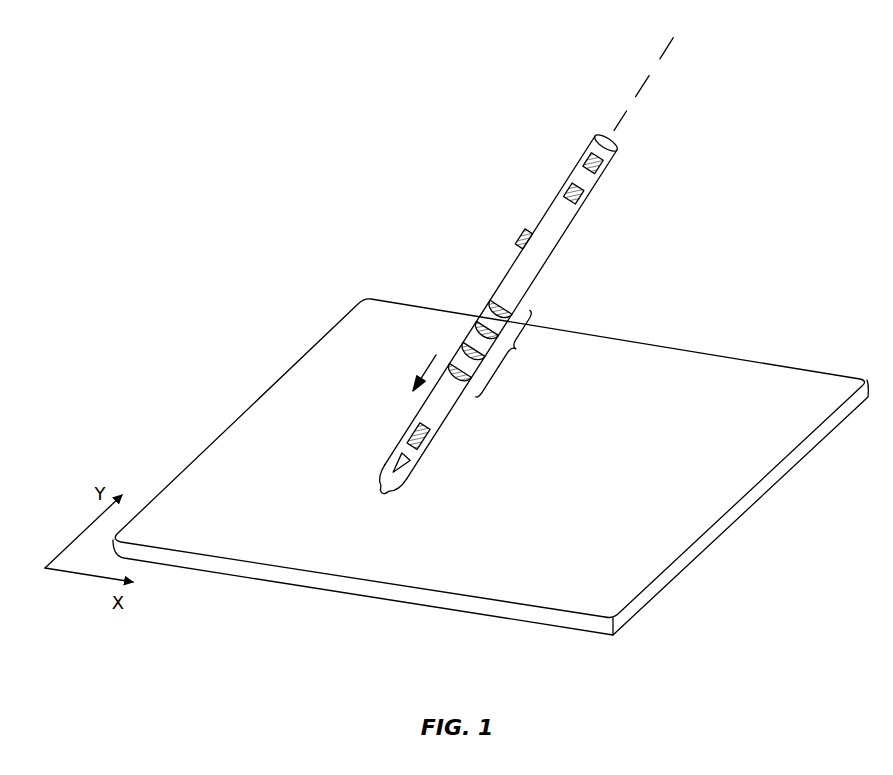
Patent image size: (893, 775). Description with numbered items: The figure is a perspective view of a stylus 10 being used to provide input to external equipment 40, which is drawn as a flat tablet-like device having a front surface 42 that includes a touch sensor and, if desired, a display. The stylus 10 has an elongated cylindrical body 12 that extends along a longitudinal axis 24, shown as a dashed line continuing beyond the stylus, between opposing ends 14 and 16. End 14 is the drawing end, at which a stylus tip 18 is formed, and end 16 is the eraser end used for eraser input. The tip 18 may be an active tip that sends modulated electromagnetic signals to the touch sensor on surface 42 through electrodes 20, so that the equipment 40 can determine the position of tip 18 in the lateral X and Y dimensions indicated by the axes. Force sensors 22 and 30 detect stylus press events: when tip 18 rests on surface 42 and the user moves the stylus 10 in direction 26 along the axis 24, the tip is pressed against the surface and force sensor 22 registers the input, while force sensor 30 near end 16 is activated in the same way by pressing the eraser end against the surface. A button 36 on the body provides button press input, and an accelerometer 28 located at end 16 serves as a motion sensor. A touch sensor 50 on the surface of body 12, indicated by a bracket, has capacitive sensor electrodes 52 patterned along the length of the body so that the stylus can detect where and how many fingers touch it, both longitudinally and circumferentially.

The stylus 10 is at (503, 217).
The body 12 is at (545, 268).
The end 14 is at (366, 480).
The end 16 is at (630, 155).
The stylus tip 18 is at (381, 497).
The electrodes 20 is at (394, 457).
The force sensor 22 is at (435, 441).
The longitudinal axis 24 is at (643, 88).
The direction 26 is at (424, 371).
The accelerometer 28 is at (563, 190).
The force sensor 30 is at (582, 160).
The button 36 is at (517, 240).
The external equipment 40 is at (687, 573).
The surface 42 is at (702, 503).
The touch sensor 50 is at (522, 365).
The capacitive sensor electrodes 52 is at (447, 365).